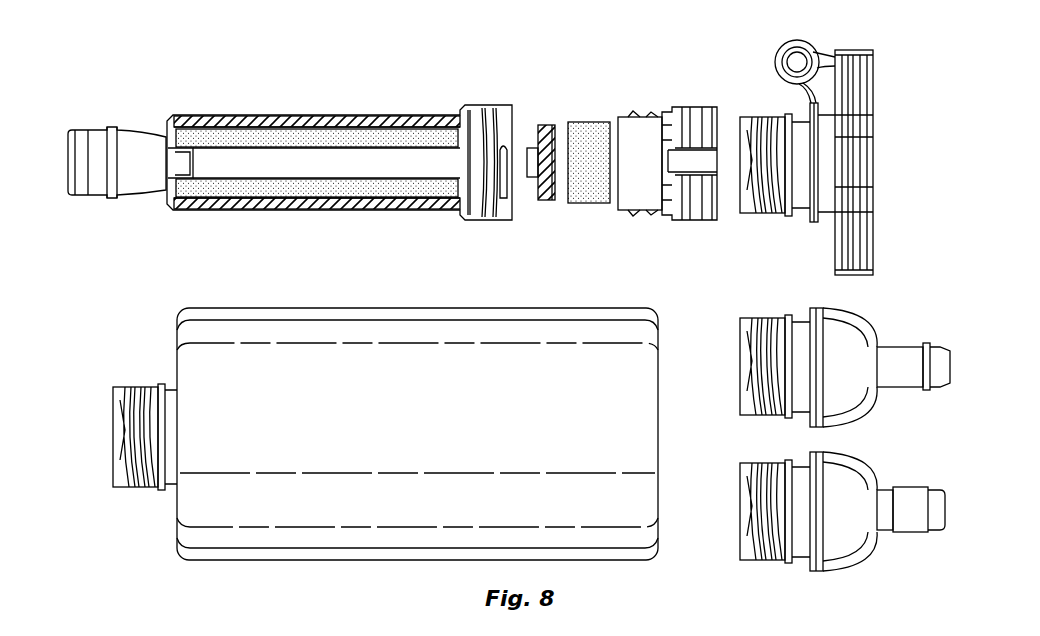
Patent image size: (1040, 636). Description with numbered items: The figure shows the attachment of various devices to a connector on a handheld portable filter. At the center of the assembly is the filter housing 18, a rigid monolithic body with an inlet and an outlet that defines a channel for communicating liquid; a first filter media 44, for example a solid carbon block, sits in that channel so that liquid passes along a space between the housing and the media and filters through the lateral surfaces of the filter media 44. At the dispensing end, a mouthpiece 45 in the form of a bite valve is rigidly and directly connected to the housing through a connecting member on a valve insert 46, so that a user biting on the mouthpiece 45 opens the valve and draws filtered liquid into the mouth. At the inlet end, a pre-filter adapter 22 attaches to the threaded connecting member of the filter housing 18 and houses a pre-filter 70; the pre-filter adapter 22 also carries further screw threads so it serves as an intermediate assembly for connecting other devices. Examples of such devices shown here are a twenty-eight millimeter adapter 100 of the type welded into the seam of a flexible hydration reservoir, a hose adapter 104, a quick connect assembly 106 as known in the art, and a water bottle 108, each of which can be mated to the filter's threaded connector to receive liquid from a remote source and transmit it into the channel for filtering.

The filter housing 18 is at (268, 115).
The pre-filter adapter 22 is at (680, 107).
The first filter media 44 is at (205, 130).
The mouthpiece 45 is at (68, 130).
The valve insert 46 is at (545, 125).
The pre-filter 70 is at (588, 122).
The 28mm adapter 100 is at (855, 50).
The hose adapter 104 is at (862, 328).
The quick connect assembly 106 is at (862, 470).
The water bottle 108 is at (418, 306).